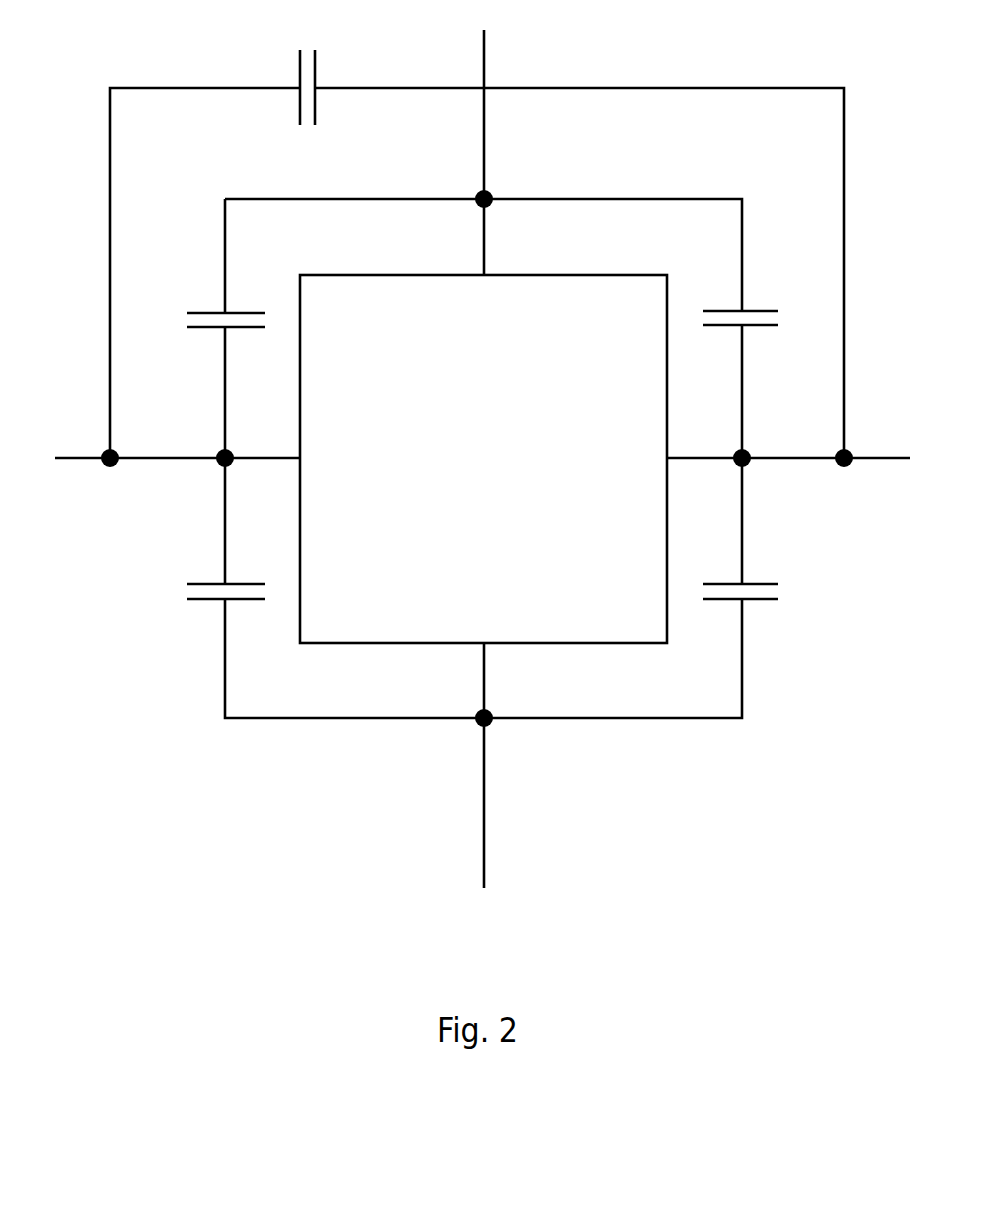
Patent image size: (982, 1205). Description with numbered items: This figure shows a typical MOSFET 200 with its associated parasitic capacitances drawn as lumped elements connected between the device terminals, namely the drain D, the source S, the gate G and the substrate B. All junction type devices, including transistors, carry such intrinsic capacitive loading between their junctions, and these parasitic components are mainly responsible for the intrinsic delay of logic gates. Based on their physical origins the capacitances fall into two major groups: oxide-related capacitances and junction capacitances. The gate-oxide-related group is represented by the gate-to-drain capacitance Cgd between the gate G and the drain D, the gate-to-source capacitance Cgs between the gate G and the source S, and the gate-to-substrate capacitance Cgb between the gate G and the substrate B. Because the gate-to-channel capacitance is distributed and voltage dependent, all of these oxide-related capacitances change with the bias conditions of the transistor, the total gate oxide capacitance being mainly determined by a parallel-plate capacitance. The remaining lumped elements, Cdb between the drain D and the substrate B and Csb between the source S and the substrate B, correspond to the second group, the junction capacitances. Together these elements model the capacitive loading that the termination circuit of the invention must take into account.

The MOSFET 200 is at (483, 459).
The gate-to-substrate capacitance Cgb is at (316, 106).
The gate-to-drain capacitance Cgd is at (206, 321).
The drain-body capacitance Cdb is at (763, 317).
The gate-to-source capacitance Cgs is at (206, 598).
The source-body capacitance Csb is at (762, 598).
The drain terminal D is at (484, 139).
The source terminal S is at (484, 782).
The gate terminal G is at (165, 458).
The body terminal B is at (800, 458).